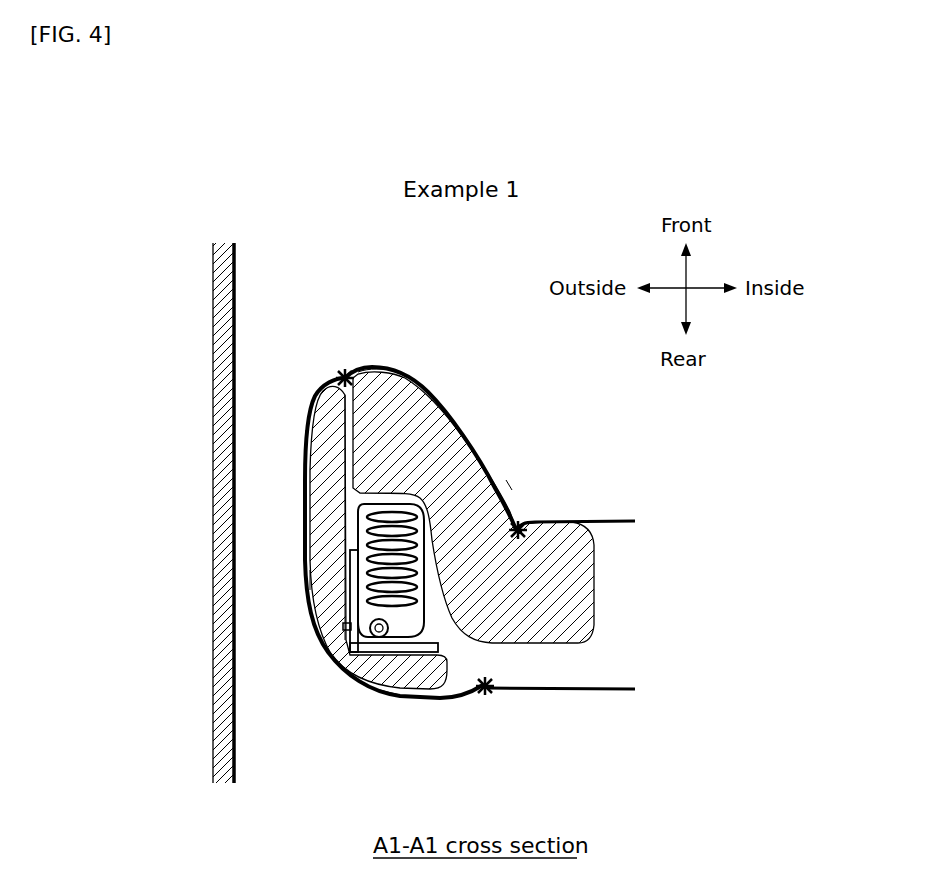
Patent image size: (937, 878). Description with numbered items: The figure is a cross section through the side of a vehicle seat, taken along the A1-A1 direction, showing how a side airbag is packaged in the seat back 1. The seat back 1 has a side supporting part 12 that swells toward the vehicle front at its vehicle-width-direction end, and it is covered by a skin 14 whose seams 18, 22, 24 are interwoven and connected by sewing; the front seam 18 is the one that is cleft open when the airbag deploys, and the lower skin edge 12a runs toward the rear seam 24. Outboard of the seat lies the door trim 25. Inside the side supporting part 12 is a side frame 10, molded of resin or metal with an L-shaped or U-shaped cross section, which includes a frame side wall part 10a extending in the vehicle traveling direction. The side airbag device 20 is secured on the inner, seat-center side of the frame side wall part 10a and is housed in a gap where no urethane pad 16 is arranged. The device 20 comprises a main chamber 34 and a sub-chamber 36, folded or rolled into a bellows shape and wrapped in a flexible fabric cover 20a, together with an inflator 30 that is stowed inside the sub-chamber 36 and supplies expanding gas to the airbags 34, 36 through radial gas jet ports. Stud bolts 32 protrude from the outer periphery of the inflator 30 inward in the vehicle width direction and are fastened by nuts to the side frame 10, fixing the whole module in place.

The seat back 1 is at (620, 657).
The side frame 10 is at (413, 698).
The frame side wall part 10a is at (342, 585).
The side supporting part 12 is at (446, 402).
The lower end of outer skin 12a is at (396, 698).
The skin 14 is at (374, 366).
The urethane pad 16 is at (306, 436).
The front seam 18 is at (337, 377).
The side airbag device 20 is at (358, 506).
The flexible cover 20a is at (357, 530).
The seam 22 is at (518, 526).
The seam 24 is at (485, 695).
The door trim 25 is at (235, 252).
The inflator 30 is at (362, 673).
The stud bolt 32 is at (342, 638).
The main chamber 34 is at (428, 631).
The sub-chamber 36 is at (379, 628).